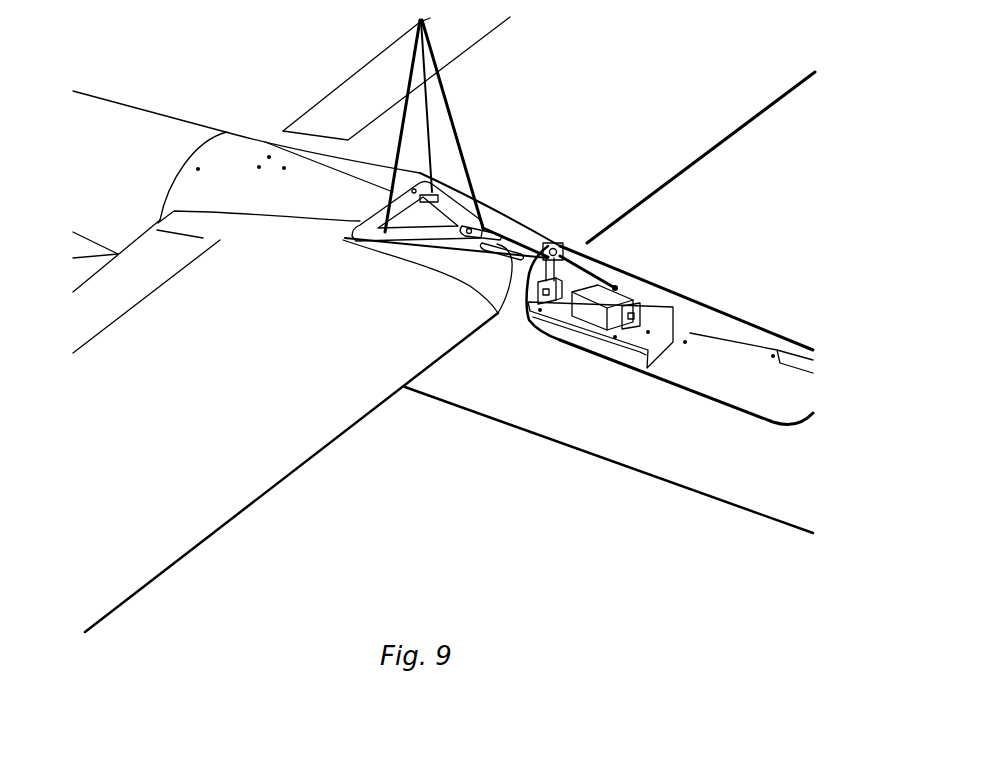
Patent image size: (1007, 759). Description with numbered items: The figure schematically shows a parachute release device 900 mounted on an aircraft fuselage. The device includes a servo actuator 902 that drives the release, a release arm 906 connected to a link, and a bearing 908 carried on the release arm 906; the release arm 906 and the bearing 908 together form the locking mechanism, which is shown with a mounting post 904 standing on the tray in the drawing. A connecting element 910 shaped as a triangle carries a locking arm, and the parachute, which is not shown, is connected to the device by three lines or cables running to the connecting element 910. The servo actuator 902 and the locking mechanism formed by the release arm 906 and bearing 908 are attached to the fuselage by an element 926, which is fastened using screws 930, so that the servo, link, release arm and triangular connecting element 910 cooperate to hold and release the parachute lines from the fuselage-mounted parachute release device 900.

The parachute release device 900 is at (712, 177).
The servo actuator 902 is at (607, 303).
The mounting post 904 is at (545, 247).
The release arm 906 is at (567, 247).
The bearing 908 is at (547, 247).
The connecting element 910 is at (447, 198).
The element 926 is at (613, 278).
The screws 930 is at (615, 343).